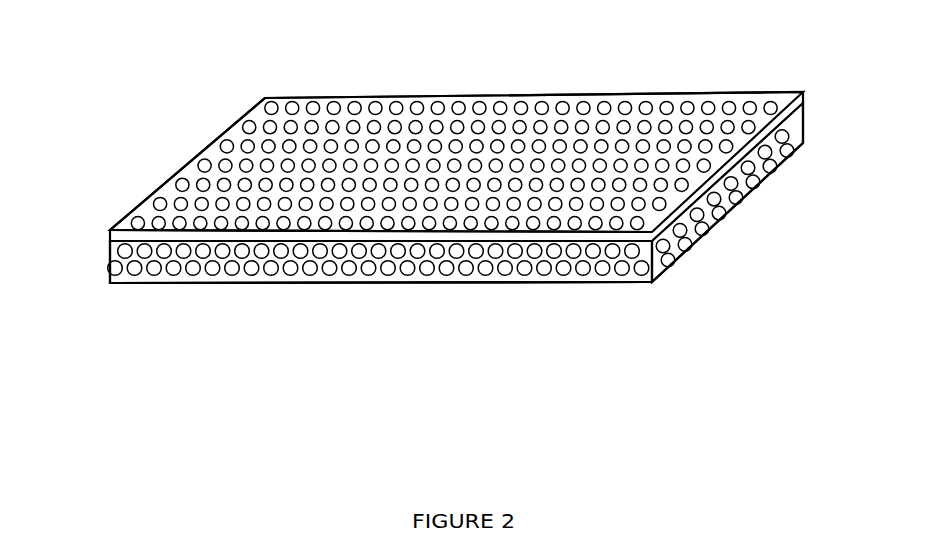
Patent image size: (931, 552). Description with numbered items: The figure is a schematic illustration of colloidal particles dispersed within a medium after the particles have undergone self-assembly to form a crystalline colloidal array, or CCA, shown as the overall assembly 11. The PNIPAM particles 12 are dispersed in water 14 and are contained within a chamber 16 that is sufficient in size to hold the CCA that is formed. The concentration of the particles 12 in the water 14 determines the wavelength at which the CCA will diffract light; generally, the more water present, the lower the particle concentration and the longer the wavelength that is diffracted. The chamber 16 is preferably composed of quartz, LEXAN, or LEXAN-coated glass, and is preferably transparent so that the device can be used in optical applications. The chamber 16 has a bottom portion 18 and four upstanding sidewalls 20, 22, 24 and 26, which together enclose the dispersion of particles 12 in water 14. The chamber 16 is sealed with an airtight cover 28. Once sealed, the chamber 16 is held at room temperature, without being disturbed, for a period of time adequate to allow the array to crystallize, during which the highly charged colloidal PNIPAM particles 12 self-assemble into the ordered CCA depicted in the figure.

The laminated article 11 is at (814, 110).
The PNIPAM particles 12 is at (500, 278).
The water 14 is at (402, 283).
The chamber 16 is at (100, 265).
The bottom portion 18 is at (235, 285).
The upstanding sidewall 20 is at (110, 247).
The upstanding sidewall 22 is at (737, 210).
The upstanding sidewall 24 is at (408, 98).
The upstanding sidewall 26 is at (240, 122).
The airtight cover 28 is at (110, 237).